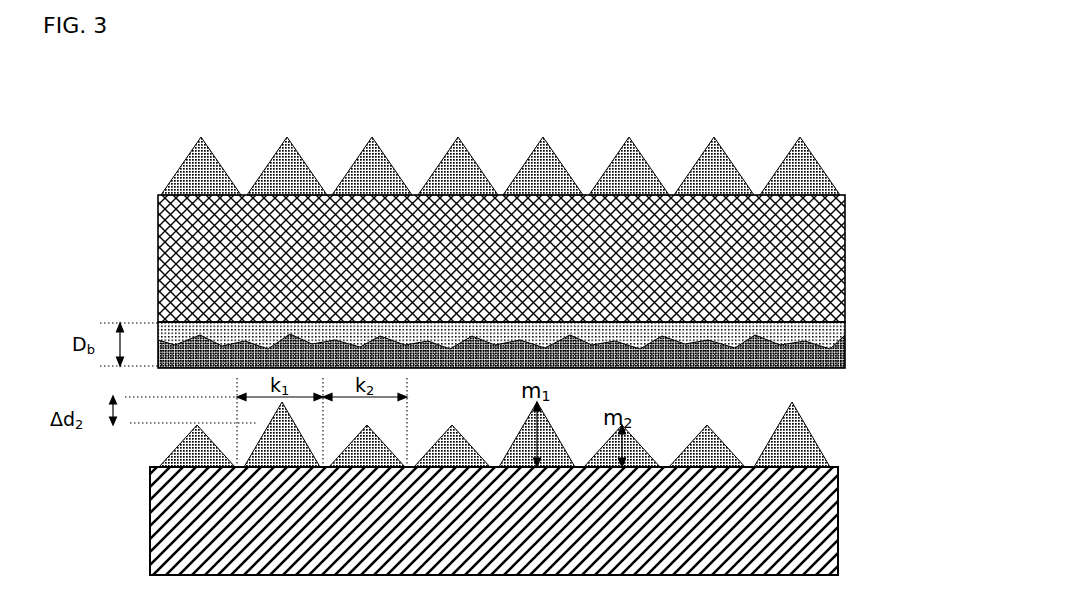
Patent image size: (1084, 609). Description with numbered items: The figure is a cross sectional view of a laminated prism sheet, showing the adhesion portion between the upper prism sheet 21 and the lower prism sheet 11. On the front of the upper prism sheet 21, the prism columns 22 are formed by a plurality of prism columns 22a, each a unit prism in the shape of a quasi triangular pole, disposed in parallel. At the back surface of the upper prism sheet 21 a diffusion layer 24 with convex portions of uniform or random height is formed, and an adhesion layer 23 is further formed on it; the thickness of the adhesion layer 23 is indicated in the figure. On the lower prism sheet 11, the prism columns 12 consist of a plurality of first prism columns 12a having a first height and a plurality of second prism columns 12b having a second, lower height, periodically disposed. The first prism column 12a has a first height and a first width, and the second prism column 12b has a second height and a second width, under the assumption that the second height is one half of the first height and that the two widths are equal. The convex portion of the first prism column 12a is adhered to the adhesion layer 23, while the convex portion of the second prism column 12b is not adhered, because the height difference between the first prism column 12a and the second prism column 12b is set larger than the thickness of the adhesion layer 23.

The lower prism sheet 11 is at (863, 469).
The prism columns of the lower prism sheet 12 is at (551, 425).
The first prism column 12a is at (537, 424).
The second prism column 12b is at (452, 424).
The upper prism sheet 21 is at (863, 199).
The prism columns of the upper prism sheet 22 is at (552, 136).
The prism column 22a is at (905, 167).
The adhesion layer 23 is at (863, 325).
The diffusion layer 24 is at (847, 324).